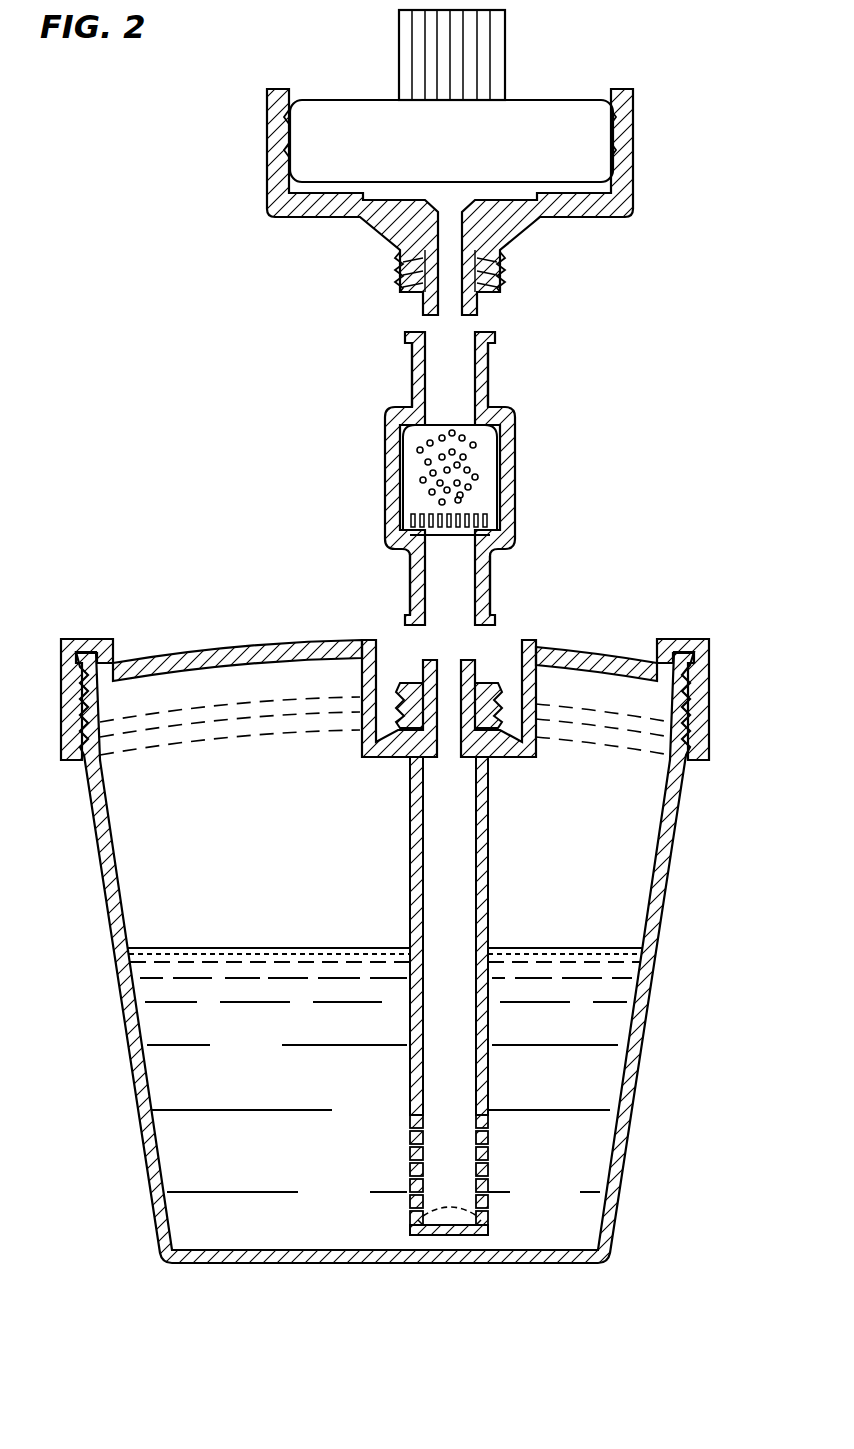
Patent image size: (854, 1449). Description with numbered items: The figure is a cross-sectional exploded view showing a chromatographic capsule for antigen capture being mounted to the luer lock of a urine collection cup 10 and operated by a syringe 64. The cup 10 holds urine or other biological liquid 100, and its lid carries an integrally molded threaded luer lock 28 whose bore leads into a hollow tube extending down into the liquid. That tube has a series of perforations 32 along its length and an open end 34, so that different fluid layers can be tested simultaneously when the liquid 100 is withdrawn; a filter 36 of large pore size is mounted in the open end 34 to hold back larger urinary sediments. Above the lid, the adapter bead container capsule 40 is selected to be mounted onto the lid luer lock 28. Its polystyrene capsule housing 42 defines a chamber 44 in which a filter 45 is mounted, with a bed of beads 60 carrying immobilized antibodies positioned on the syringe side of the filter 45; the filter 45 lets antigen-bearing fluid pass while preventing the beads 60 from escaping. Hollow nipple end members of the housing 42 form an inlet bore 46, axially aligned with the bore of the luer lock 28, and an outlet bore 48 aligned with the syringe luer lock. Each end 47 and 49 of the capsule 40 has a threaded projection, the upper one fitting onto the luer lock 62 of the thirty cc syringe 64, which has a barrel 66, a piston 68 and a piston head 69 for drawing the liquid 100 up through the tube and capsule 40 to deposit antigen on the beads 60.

The urine collection cup 10 is at (700, 817).
The luer lock 28 is at (403, 675).
The perforations 32 is at (488, 1120).
The open end 34 is at (467, 1240).
The filter 36 is at (442, 1216).
The adapter bead container capsule 40 is at (380, 470).
The capsule housing 42 is at (516, 508).
The chamber 44 is at (516, 455).
The filter 45 is at (492, 533).
The inlet bore 46 is at (452, 590).
The end 47 is at (493, 623).
The outlet bore 48 is at (455, 372).
The end 49 is at (493, 337).
The beads 60 is at (505, 483).
The luer lock 62 is at (500, 273).
The syringe 64 is at (243, 150).
The barrel 66 is at (645, 153).
The piston 68 is at (505, 47).
The piston head 69 is at (633, 108).
The biological liquid 100 is at (590, 1037).